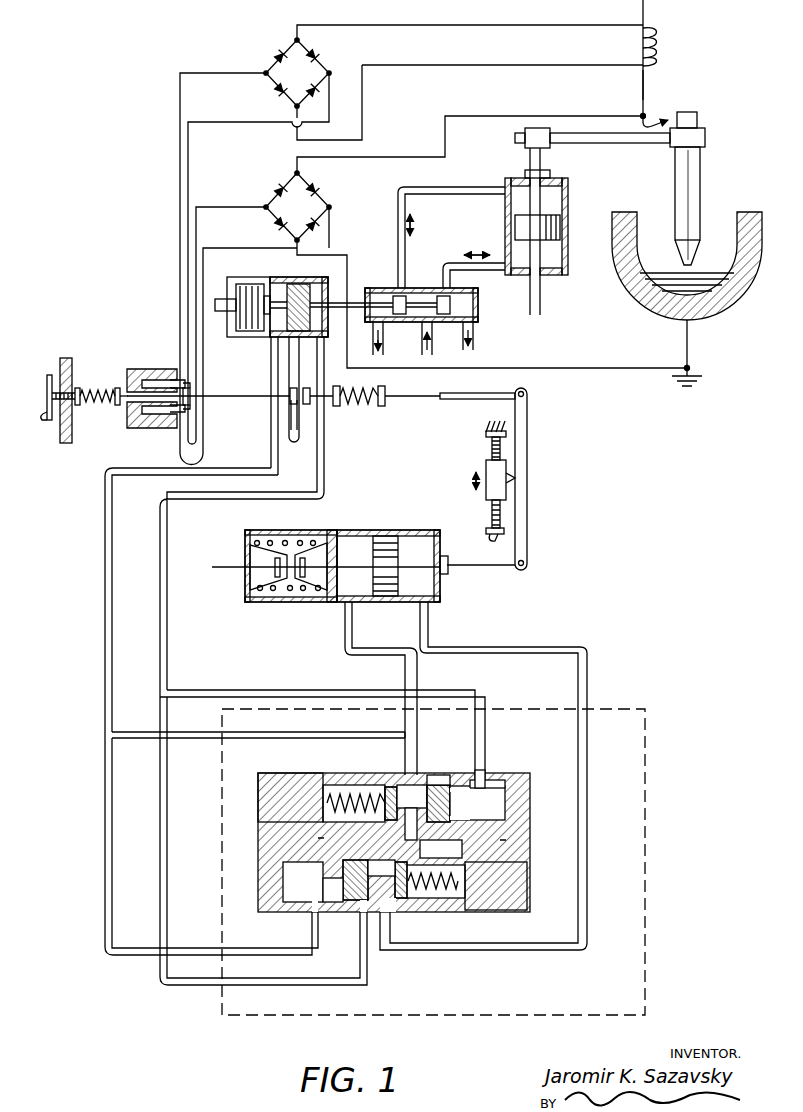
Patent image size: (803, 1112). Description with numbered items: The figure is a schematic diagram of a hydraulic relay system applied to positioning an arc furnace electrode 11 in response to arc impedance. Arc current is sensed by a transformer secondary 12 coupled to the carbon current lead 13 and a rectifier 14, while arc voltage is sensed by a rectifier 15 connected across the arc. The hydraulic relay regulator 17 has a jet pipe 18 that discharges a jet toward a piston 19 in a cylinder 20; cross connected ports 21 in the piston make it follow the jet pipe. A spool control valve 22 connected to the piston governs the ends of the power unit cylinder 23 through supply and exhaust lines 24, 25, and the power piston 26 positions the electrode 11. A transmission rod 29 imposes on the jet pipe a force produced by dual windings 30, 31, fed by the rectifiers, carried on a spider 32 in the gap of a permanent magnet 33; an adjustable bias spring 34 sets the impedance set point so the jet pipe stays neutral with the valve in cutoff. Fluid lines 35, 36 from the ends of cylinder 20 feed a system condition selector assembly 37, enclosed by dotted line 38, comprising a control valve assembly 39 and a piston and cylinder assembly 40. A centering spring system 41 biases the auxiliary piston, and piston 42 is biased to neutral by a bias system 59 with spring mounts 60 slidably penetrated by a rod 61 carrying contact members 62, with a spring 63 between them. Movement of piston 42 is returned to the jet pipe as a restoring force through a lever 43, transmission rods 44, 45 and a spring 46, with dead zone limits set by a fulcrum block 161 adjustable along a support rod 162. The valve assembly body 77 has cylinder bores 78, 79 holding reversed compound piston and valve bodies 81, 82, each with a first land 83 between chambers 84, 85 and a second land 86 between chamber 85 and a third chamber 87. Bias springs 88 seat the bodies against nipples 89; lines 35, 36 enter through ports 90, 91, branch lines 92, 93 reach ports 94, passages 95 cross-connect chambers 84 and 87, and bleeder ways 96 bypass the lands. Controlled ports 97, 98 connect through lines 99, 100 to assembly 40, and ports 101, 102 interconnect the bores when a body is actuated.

The arc furnace electrode 11 is at (703, 182).
The transformer secondary 12 is at (658, 47).
The carbon current lead 13 is at (645, 87).
The rectifier 14 is at (289, 44).
The rectifier 15 is at (346, 180).
The hydraulic relay regulator 17 is at (309, 444).
The jet pipe 18 is at (303, 430).
The piston 19 is at (290, 279).
The cylinder 20 is at (242, 306).
The cross connected ports 21 is at (299, 348).
The control valve 22 is at (411, 289).
The power unit cylinder 23 is at (583, 202).
The pressurized fluid supply line 24 is at (433, 352).
The exhaust line 25 is at (385, 357).
The piston 26 is at (553, 231).
The transmission rod 29 is at (256, 398).
The winding 30 is at (179, 380).
The winding 31 is at (190, 386).
The spider 32 is at (191, 410).
The permanent magnet 33 is at (128, 368).
The bias spring 34 is at (97, 389).
The fluid line 35 is at (269, 452).
The fluid line 36 is at (327, 473).
The system condition selector assembly 37 is at (456, 811).
The dotted line 38 is at (648, 746).
The control valve assembly 39 is at (397, 845).
The piston and cylinder assembly 40 is at (392, 538).
The centering spring system 41 is at (250, 330).
The piston 42 is at (383, 548).
The lever 43 is at (528, 434).
The transmission rod 44 is at (479, 399).
The transmission rod 45 is at (345, 407).
The spring 46 is at (385, 407).
The bias system 59 is at (323, 570).
The spring mounts 60 is at (260, 598).
The rod 61 is at (345, 570).
The contact members 62 is at (262, 574).
The spring 63 is at (291, 598).
The body 77 is at (294, 774).
The cylinder bore 78 is at (484, 802).
The cylinder bore 79 is at (310, 886).
The compound piston and valve body 81 is at (364, 930).
The compound piston and valve body 82 is at (431, 779).
The first land portion 83 is at (420, 830).
The cylinder chamber 84 is at (506, 822).
The cylinder chamber 85 is at (439, 786).
The second land portion 86 is at (373, 792).
The third chamber 87 is at (330, 791).
The bias springs 88 is at (344, 792).
The nipples 89 is at (531, 782).
The port 90 is at (488, 790).
The port 91 is at (310, 916).
The branch line 92 is at (126, 735).
The branch line 93 is at (162, 802).
The ports 94 is at (461, 772).
The passages 95 is at (500, 841).
The bleeder ways 96 is at (488, 772).
The controlled port 97 is at (405, 727).
The controlled port 98 is at (393, 924).
The line 99 is at (355, 655).
The line 100 is at (429, 624).
The port 101 is at (381, 868).
The port 102 is at (441, 849).
The fulcrum block 161 is at (492, 487).
The support rod 162 is at (494, 515).